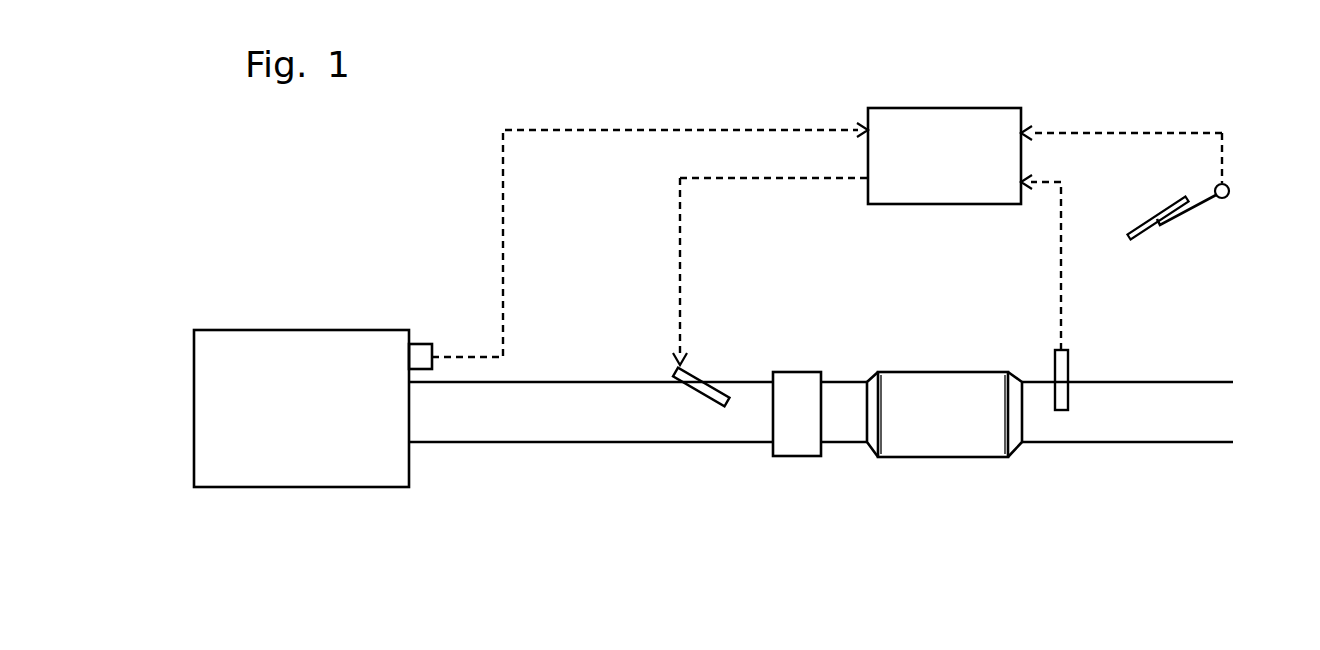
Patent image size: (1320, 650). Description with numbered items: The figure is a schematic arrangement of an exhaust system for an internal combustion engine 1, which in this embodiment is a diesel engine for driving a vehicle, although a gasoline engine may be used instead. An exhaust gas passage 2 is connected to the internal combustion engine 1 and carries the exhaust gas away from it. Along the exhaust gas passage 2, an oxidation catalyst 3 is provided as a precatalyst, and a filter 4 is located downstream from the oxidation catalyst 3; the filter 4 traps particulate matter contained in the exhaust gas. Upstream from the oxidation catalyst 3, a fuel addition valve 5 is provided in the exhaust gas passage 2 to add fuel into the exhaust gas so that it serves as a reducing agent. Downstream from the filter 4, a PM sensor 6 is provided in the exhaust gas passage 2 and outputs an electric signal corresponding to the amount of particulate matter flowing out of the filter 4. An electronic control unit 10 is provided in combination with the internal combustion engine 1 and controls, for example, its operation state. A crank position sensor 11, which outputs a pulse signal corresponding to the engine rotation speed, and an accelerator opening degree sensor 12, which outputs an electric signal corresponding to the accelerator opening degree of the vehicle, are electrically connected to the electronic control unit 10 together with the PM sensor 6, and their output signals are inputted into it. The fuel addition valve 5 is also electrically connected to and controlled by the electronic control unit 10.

The internal combustion engine 1 is at (303, 330).
The exhaust gas passage 2 is at (591, 442).
The oxidation catalyst 3 is at (795, 456).
The filter 4 is at (943, 457).
The fuel addition valve 5 is at (697, 370).
The PM sensor 6 is at (1068, 367).
The electronic control unit 10 is at (950, 108).
The crank position sensor 11 is at (422, 344).
The accelerator opening degree sensor 12 is at (1222, 197).